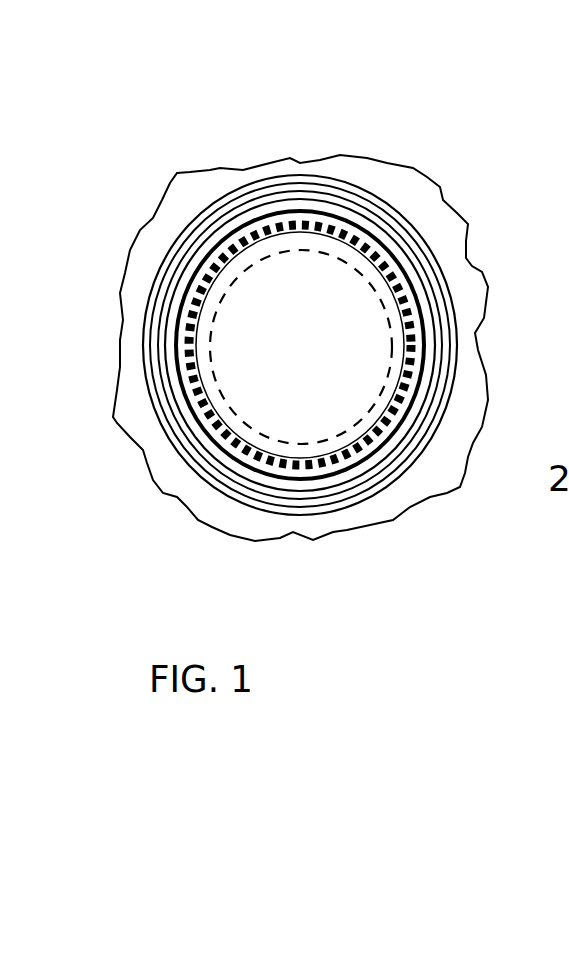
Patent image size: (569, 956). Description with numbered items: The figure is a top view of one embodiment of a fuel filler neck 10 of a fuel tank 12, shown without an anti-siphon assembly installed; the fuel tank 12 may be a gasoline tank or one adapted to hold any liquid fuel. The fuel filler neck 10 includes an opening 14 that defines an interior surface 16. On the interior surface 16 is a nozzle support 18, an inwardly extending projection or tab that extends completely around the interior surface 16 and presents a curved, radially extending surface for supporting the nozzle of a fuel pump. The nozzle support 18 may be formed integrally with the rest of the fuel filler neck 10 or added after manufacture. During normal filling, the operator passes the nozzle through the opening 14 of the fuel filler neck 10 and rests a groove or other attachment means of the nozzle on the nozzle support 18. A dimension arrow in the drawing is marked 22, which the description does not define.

The fuel filler neck 10 is at (381, 206).
The fuel tank 12 is at (458, 268).
The opening 14 is at (303, 215).
The interior surface 16 is at (244, 314).
The nozzle support 18 is at (318, 470).
The inner opening diameter 22 is at (351, 427).